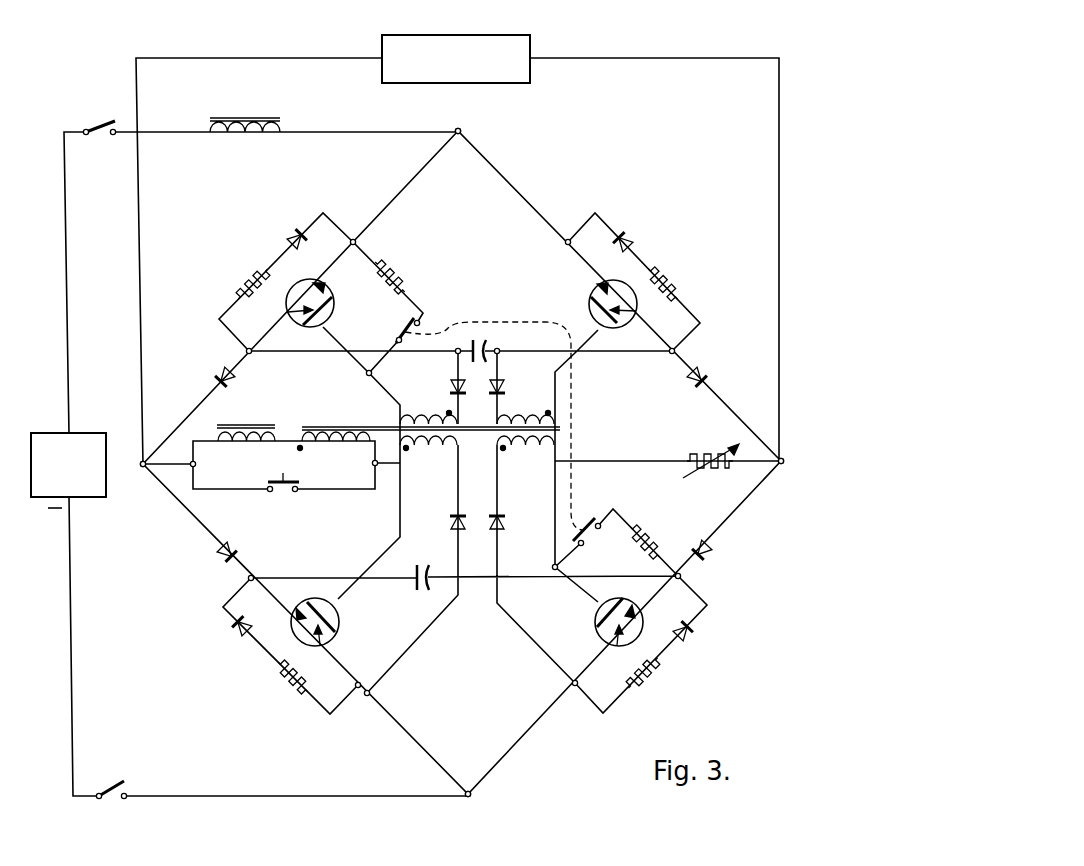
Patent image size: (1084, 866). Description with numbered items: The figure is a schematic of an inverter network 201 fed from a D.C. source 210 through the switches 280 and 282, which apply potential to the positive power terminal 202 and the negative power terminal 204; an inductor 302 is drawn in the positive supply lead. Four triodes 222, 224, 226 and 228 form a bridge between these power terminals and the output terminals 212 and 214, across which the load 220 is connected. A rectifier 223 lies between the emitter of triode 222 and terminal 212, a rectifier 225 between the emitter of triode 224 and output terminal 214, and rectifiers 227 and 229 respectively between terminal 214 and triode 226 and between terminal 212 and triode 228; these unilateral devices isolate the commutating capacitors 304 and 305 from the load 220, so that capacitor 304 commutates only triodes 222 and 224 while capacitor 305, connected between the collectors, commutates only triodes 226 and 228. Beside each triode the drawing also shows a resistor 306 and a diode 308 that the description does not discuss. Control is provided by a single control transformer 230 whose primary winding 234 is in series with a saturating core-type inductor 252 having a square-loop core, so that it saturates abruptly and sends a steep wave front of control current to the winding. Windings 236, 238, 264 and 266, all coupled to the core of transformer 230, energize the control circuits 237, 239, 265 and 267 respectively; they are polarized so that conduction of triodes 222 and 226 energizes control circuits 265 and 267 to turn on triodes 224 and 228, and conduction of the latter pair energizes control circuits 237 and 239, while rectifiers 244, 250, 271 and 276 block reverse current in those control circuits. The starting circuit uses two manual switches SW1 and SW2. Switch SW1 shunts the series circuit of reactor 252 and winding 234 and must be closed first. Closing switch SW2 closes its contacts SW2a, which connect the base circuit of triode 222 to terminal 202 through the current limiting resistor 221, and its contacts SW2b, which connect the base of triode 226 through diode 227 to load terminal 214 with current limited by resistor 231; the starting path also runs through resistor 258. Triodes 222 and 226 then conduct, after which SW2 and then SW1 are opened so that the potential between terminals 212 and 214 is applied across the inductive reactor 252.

The inverter network 201 is at (610, 176).
The positive power terminal 202 is at (461, 131).
The negative power terminal 204 is at (469, 795).
The D.C. source 210 is at (98, 433).
The output terminal 212 is at (142, 467).
The output terminal 214 is at (781, 464).
The load 220 is at (540, 48).
The current limiting resistor 221 is at (422, 272).
The triode 222 is at (334, 311).
The rectifier 223 is at (233, 372).
The triode 224 is at (590, 316).
The rectifier 225 is at (690, 383).
The triode 226 is at (598, 632).
The rectifier 227 is at (710, 549).
The triode 228 is at (338, 633).
The rectifier 229 is at (236, 548).
The control transformer 230 is at (316, 434).
The resistor 231 is at (662, 540).
The primary winding 234 is at (356, 436).
The winding 236 is at (398, 420).
The control circuit 237 is at (357, 391).
The winding 238 is at (525, 448).
The control circuit 239 is at (537, 668).
The rectifier 244 is at (448, 387).
The rectifier 250 is at (502, 514).
The saturating core-type inductor 252 is at (240, 436).
The resistor 258 is at (690, 457).
The winding 264 is at (536, 420).
The control circuit 265 is at (617, 391).
The winding 266 is at (428, 448).
The control circuit 267 is at (457, 668).
The rectifier 271 is at (502, 385).
The rectifier 276 is at (452, 514).
The switch 280 is at (103, 127).
The switch 282 is at (112, 786).
The inductor 302 is at (276, 118).
The commutating capacitor 304 is at (485, 347).
The commutating capacitor 305 is at (426, 588).
The resistor 306 is at (243, 283).
The diode 308 is at (288, 238).
The starting switch SW1 is at (283, 490).
The starting switch SW2 is at (497, 311).
The set of contacts SW2a is at (417, 327).
The second set of contacts SW2b is at (598, 530).